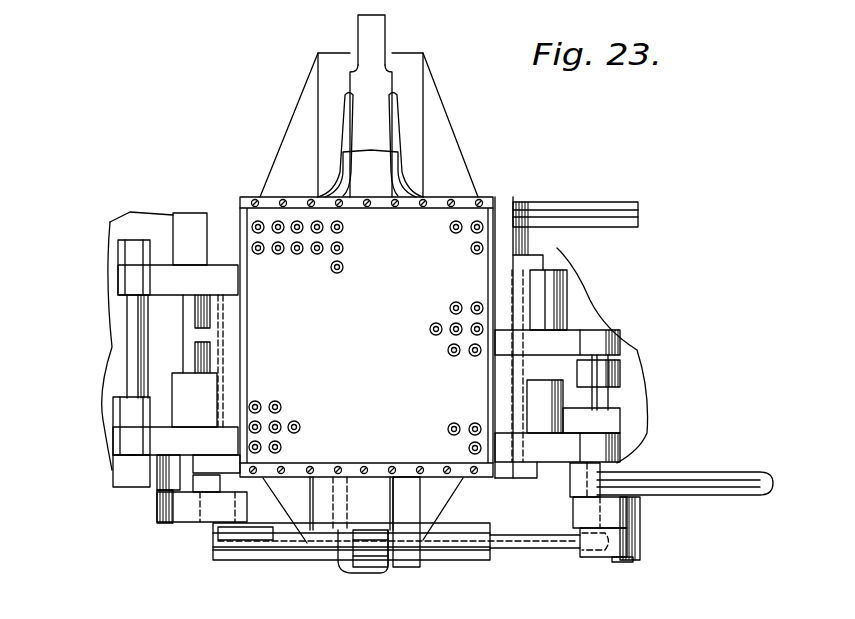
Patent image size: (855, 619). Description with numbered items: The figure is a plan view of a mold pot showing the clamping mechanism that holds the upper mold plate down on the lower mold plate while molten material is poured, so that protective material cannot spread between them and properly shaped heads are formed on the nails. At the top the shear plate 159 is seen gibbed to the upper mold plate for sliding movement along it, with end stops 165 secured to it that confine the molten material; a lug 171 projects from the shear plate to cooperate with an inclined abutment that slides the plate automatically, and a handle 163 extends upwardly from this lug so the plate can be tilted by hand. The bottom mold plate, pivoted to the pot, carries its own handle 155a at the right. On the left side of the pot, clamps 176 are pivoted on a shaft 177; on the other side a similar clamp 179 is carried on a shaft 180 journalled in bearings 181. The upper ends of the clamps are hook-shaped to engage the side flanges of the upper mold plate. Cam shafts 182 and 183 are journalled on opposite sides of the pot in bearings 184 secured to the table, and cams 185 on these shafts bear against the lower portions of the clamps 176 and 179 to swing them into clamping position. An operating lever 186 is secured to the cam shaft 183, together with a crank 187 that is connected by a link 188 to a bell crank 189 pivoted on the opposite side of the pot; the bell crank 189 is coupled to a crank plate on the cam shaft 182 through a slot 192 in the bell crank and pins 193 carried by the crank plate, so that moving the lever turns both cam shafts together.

The handle 155a is at (585, 196).
The shear plate 159 is at (427, 227).
The handle 163 is at (283, 555).
The end stops 165 is at (387, 205).
The lug 171 is at (358, 570).
The clamps 176 is at (230, 280).
The shaft 177 is at (187, 317).
The clamp 179 is at (557, 342).
The shaft 180 is at (552, 308).
The bearings 181 is at (565, 287).
The cam shaft 182 is at (140, 312).
The cam shaft 183 is at (612, 400).
The bearings 184 is at (595, 348).
The cams 185 is at (140, 275).
The operating lever 186 is at (723, 488).
The crank 187 is at (590, 510).
The link 188 is at (510, 542).
The bell crank 189 is at (188, 512).
The slot 192 is at (155, 510).
The pins 193 is at (157, 503).